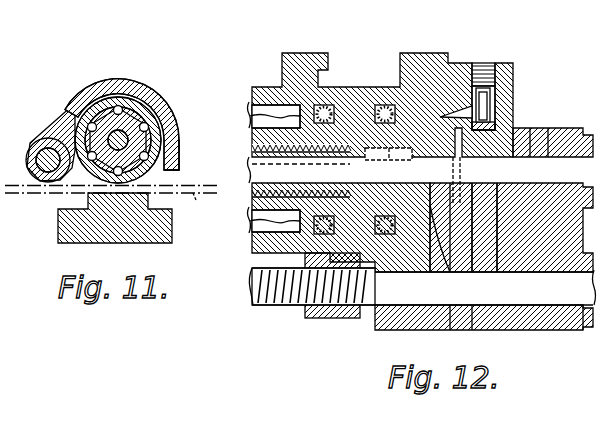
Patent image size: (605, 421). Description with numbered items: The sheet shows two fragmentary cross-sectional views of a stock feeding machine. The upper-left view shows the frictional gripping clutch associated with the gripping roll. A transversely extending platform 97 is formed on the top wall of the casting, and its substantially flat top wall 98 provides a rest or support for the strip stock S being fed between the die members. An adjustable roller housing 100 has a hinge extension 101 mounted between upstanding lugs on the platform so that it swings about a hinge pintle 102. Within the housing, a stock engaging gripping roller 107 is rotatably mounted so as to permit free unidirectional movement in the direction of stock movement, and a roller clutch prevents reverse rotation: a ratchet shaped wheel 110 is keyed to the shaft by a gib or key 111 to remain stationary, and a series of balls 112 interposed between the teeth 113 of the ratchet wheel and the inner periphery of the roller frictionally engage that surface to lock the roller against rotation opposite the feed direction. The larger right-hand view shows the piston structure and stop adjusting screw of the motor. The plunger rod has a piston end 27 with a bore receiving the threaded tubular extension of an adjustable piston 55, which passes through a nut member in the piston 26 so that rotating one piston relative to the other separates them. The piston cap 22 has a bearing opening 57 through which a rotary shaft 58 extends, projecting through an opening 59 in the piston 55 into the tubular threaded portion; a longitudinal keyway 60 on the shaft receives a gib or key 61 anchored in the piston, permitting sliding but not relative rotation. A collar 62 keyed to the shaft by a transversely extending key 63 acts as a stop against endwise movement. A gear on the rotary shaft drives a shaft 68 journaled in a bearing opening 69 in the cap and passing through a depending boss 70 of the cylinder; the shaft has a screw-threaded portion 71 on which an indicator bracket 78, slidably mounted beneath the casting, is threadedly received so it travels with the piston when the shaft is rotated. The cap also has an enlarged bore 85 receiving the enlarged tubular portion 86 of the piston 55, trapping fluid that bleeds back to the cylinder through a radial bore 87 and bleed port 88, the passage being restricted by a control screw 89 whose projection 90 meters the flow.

In FIG. 11, the platform 97 is at (60, 227).
In FIG. 11, the top wall 98 is at (160, 186).
In FIG. 11, the roller housing 100 is at (160, 103).
In FIG. 11, the hinge extension 101 is at (67, 125).
In FIG. 11, the hinge pintle 102 is at (36, 160).
In FIG. 11, the gripping roller 107 is at (110, 102).
In FIG. 11, the ratchet shaped wheel 110 is at (138, 106).
In FIG. 11, the gib or key 111 is at (85, 117).
In FIG. 11, the balls 112 is at (130, 100).
In FIG. 11, the teeth 113 is at (181, 130).
In FIG. 11, the strip stock S is at (196, 207).
In FIG. 12, the piston cap 22 is at (555, 328).
In FIG. 12, the piston 26 is at (254, 222).
In FIG. 12, the piston end 27 is at (254, 117).
In FIG. 12, the adjustable piston 55 is at (392, 104).
In FIG. 12, the bearing opening 57 is at (566, 128).
In FIG. 12, the rotary shaft 58 is at (546, 128).
In FIG. 12, the opening 59 is at (310, 164).
In FIG. 12, the longitudinal keyway 60 is at (352, 162).
In FIG. 12, the gib or key 61 is at (460, 166).
In FIG. 12, the collar 62 is at (492, 240).
In FIG. 12, the transversely extending key 63 is at (524, 128).
In FIG. 12, the shaft 68 is at (485, 287).
In FIG. 12, the bearing opening 69 is at (541, 328).
In FIG. 12, the depending boss 70 is at (430, 325).
In FIG. 12, the screw-threaded portion 71 is at (262, 305).
In FIG. 12, the indicator bracket 78 is at (318, 318).
In FIG. 12, the enlarged bore 85 is at (475, 240).
In FIG. 12, the enlarged tubular portion 86 is at (440, 210).
In FIG. 12, the radial bore 87 is at (492, 94).
In FIG. 12, the bleed port 88 is at (456, 87).
In FIG. 12, the control screw 89 is at (488, 65).
In FIG. 12, the projection 90 is at (492, 108).